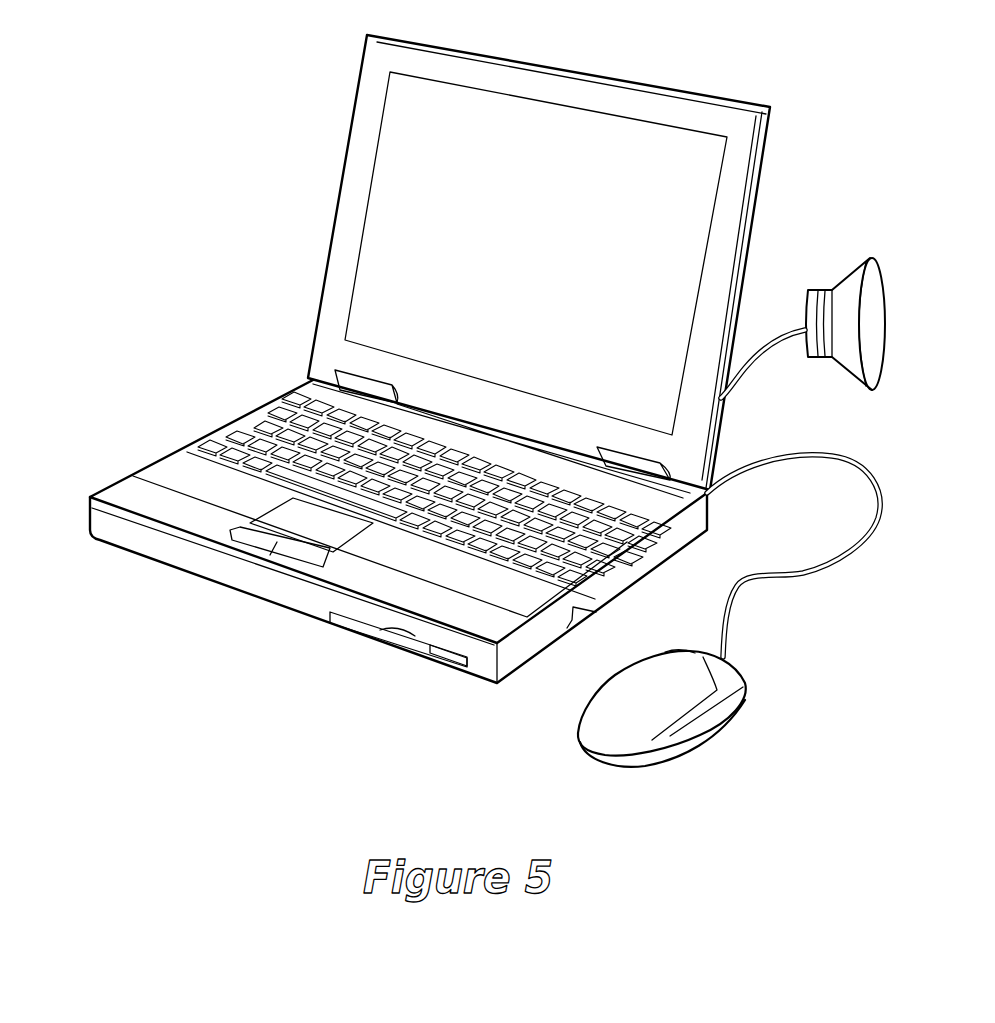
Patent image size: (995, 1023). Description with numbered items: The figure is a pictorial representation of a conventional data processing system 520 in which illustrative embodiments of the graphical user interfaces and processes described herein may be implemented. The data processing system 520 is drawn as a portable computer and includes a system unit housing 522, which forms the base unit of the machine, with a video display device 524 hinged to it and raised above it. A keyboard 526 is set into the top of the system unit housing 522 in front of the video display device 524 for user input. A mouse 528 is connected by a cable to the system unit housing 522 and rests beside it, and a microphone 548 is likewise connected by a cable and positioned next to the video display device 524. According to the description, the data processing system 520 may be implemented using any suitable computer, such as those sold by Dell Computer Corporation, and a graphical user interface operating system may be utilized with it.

The data processing system 520 is at (114, 418).
The system unit housing 522 is at (620, 503).
The video display device 524 is at (560, 127).
The keyboard 526 is at (257, 430).
The mouse 528 is at (647, 707).
The microphone 548 is at (840, 300).